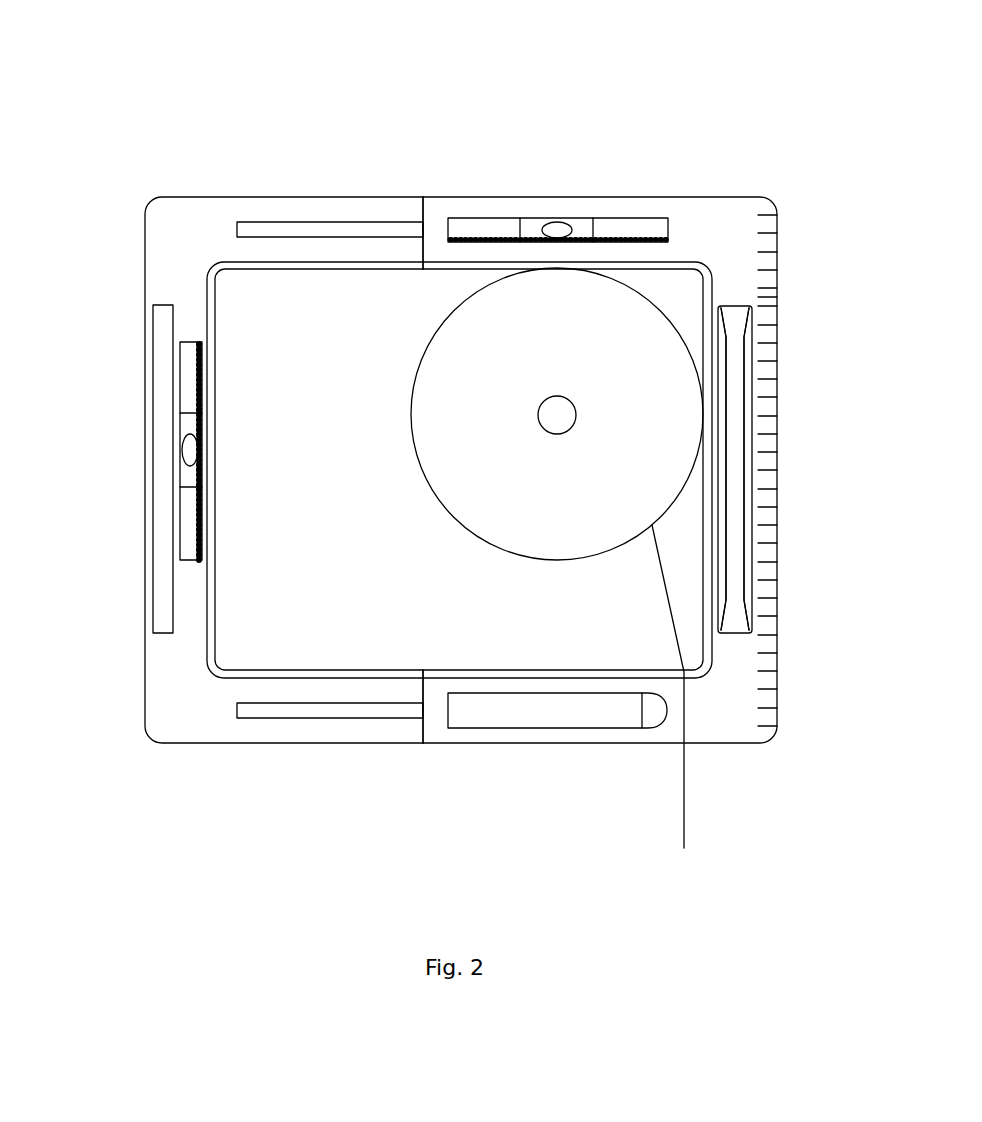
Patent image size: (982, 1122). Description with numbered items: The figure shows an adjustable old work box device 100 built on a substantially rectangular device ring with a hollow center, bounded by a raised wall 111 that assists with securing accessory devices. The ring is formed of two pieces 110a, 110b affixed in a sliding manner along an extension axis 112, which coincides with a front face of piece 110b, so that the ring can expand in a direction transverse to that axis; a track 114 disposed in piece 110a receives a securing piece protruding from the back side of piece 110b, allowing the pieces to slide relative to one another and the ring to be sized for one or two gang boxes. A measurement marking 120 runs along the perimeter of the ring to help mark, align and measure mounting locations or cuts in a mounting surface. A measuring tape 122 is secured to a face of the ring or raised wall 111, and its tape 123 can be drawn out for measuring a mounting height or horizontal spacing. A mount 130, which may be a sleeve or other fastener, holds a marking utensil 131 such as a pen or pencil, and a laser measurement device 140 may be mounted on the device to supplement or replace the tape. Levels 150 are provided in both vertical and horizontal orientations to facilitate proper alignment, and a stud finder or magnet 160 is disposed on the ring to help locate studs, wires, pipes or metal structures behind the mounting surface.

The old work box device 100 is at (227, 92).
The piece of device ring 110a is at (160, 702).
The piece of device ring 110b is at (727, 690).
The raised wall 111 is at (708, 276).
The extension axis 112 is at (423, 210).
The track 114 is at (289, 228).
The measurement marking 120 is at (765, 303).
The measuring tape 122 is at (503, 517).
The tape 123 is at (684, 825).
The mount 130 is at (732, 412).
The marking utensil 131 is at (735, 469).
The laser measurement device 140 is at (541, 717).
The level 150 is at (579, 221).
The stud finder/magnet 160 is at (163, 425).